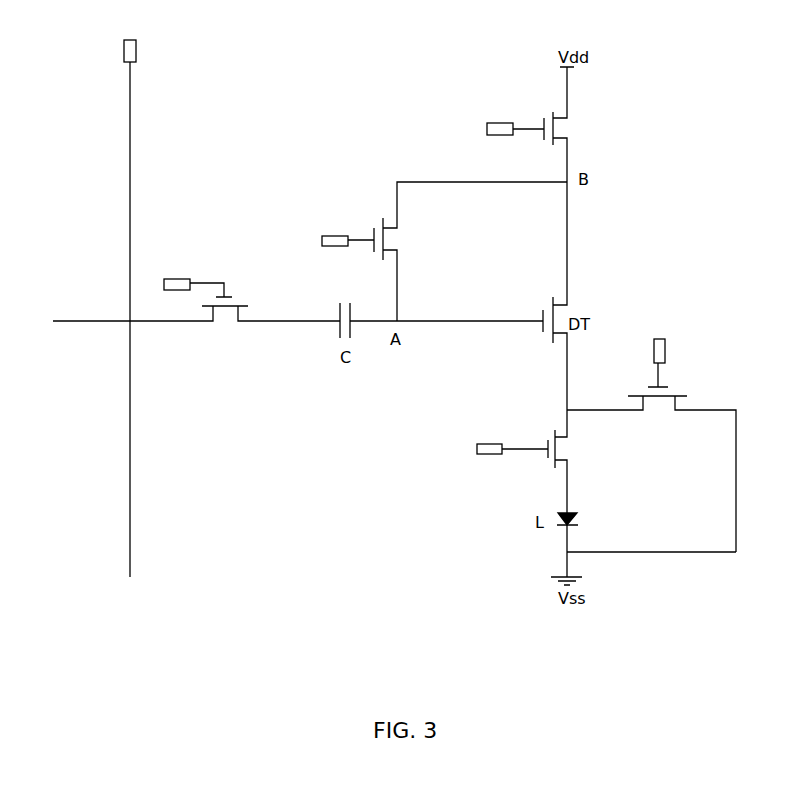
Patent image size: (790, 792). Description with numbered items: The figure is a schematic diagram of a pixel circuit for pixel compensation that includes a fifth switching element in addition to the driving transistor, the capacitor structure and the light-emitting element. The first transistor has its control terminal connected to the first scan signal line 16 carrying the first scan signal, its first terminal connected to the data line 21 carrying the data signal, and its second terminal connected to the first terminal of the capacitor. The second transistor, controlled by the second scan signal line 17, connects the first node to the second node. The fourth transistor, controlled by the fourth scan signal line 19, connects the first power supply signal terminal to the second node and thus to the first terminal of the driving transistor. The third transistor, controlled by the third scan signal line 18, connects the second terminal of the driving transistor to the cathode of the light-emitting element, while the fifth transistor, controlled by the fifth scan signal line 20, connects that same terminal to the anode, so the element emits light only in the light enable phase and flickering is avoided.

The first scan signal line 16 is at (208, 283).
The second scan signal line 17 is at (362, 243).
The third scan signal line 18 is at (658, 377).
The fourth scan signal line 19 is at (535, 128).
The fifth scan signal line 20 is at (525, 452).
The data line 21 is at (130, 176).